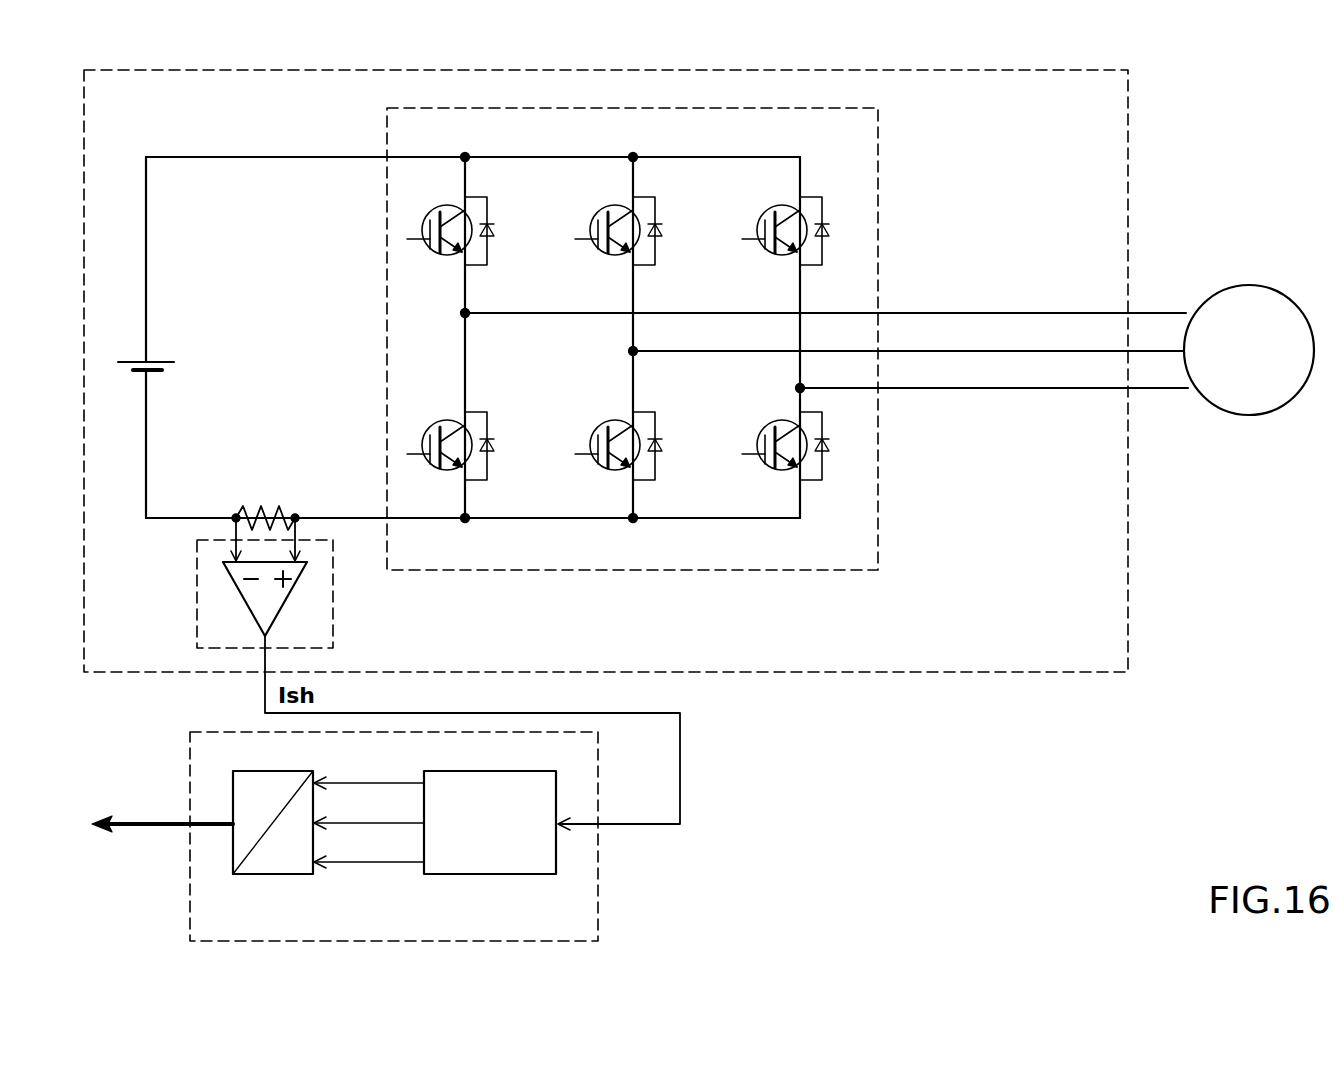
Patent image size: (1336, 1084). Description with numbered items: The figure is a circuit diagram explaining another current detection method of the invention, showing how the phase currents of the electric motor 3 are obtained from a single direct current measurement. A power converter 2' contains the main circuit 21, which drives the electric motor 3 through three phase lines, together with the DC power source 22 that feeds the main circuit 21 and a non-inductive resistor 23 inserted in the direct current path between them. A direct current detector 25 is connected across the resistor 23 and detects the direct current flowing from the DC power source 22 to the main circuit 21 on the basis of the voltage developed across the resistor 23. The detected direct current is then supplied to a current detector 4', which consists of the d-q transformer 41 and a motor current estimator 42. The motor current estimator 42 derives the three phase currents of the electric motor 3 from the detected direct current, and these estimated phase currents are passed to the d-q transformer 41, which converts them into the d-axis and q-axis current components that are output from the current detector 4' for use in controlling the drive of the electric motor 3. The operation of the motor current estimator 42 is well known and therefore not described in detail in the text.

The power converter 2' is at (703, 365).
The main circuit 21 is at (878, 135).
The DC power source 22 is at (155, 357).
The resistor 23 is at (268, 500).
The direct current detector 25 is at (333, 592).
The electric motor 3 is at (1237, 287).
The current detector 4' is at (461, 844).
The d-q transformer 41 is at (275, 875).
The motor current estimator 42 is at (516, 875).